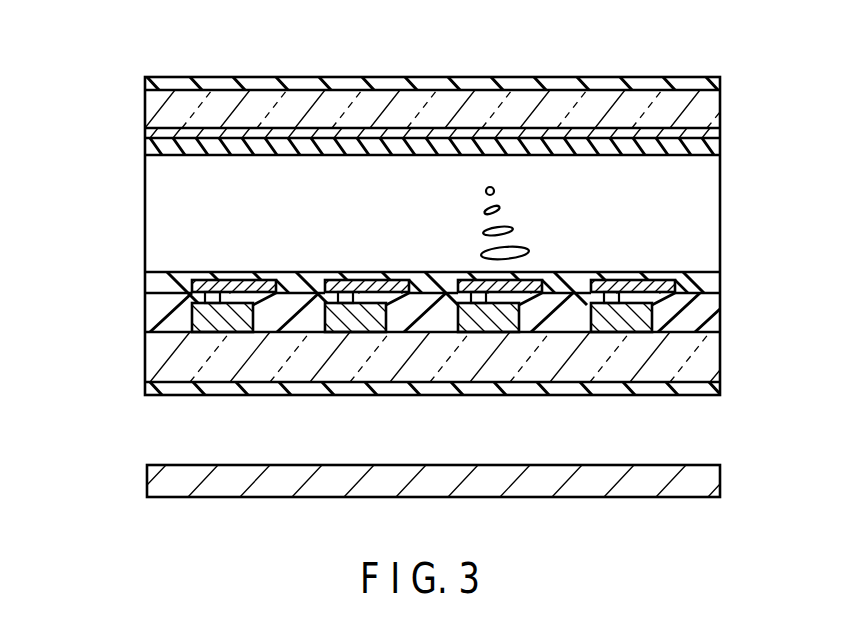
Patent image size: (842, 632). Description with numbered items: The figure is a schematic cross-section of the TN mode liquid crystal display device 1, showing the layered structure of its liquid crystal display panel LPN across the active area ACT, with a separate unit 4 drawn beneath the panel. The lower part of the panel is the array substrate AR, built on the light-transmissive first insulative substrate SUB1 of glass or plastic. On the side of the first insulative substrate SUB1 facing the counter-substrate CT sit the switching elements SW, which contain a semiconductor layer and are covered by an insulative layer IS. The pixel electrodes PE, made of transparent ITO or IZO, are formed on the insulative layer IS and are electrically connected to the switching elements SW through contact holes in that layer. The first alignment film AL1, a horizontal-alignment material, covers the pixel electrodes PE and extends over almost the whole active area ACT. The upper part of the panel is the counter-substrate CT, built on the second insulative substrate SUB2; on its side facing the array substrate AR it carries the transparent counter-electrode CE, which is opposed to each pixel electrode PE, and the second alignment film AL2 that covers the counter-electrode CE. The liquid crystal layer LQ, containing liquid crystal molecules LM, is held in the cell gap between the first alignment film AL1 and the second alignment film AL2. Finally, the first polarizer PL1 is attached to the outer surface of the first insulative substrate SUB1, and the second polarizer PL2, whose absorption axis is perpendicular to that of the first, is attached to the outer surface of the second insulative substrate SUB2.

The liquid crystal display device 1 is at (738, 83).
The backlight unit 4 is at (712, 476).
The active area ACT is at (719, 68).
The second polarizer PL2 is at (145, 81).
The counter-substrate CT is at (145, 117).
The second insulative substrate SUB2 is at (705, 100).
The counter-electrode CE is at (705, 134).
The second alignment film AL2 is at (708, 150).
The liquid crystal display panel LPN is at (70, 92).
The liquid crystal layer LQ is at (162, 235).
The liquid crystal molecules LM is at (531, 252).
The first alignment film AL1 is at (708, 285).
The insulative layer IS is at (708, 300).
The first insulative substrate SUB1 is at (708, 350).
The array substrate AR is at (145, 366).
The first polarizer PL1 is at (145, 390).
The switching element SW is at (225, 323).
The pixel electrode PE is at (273, 293).